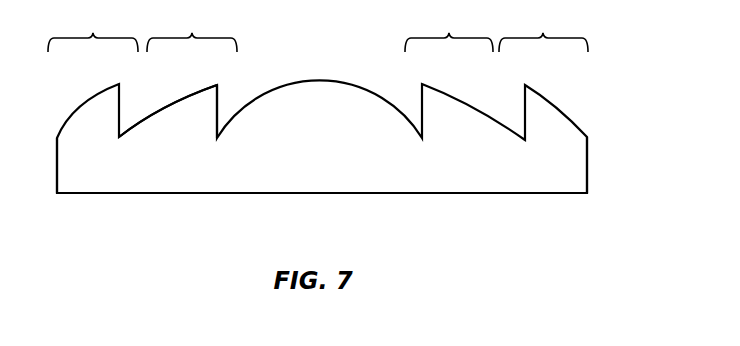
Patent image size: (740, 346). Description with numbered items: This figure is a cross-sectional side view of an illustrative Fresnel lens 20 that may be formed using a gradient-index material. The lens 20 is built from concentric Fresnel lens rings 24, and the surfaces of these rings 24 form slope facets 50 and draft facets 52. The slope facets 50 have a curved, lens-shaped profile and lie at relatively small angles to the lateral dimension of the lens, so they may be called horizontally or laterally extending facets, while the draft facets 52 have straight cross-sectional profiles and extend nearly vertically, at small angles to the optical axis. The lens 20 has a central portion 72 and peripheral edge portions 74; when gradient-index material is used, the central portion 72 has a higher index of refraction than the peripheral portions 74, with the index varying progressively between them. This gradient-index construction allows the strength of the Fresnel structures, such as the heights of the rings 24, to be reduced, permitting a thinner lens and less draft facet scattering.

The Fresnel lens 20 is at (565, 178).
The Fresnel lens rings 24 is at (318, 31).
The slope facets 50 is at (178, 104).
The draft facets 52 is at (219, 94).
The central portion 72 is at (318, 140).
The peripheral portions 74 is at (105, 155).